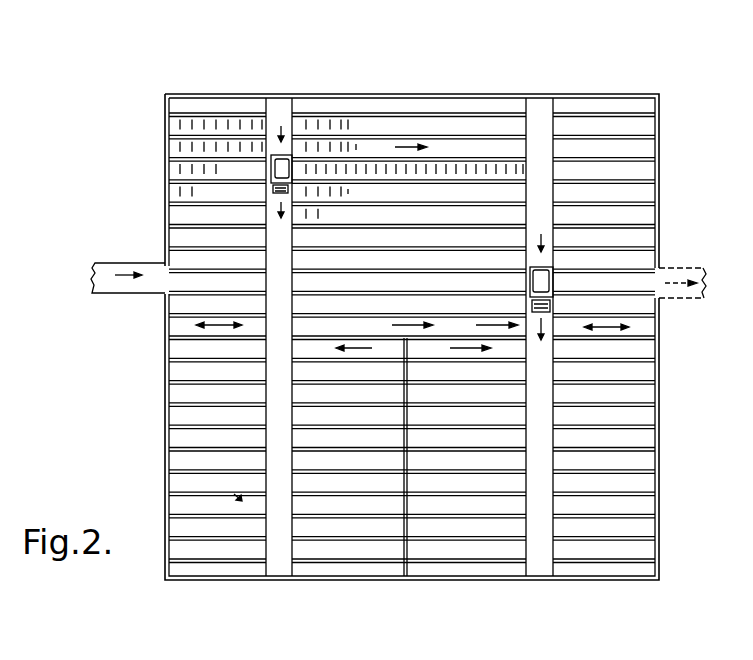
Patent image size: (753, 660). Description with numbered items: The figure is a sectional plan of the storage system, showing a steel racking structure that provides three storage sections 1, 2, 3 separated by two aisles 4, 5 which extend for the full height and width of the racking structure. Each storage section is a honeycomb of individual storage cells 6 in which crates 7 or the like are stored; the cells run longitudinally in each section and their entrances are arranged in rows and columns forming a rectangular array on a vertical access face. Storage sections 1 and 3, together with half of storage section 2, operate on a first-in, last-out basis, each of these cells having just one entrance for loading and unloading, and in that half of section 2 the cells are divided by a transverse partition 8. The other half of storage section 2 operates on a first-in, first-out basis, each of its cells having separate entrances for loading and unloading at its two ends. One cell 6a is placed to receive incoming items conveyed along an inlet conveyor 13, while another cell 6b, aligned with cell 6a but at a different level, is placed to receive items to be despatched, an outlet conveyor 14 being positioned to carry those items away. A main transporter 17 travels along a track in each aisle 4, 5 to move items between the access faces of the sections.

The storage section 1 is at (188, 371).
The storage section 2 is at (457, 118).
The storage section 3 is at (626, 441).
The aisle 4 is at (277, 560).
The aisle 5 is at (540, 570).
The storage cell 6 is at (178, 213).
The incoming-items cell 6a is at (205, 283).
The despatch cell 6b is at (614, 283).
The crate 7 is at (180, 143).
The transverse partition 8 is at (403, 548).
The inlet conveyor 13 is at (127, 284).
The outlet conveyor 14 is at (670, 301).
The main transporter 17 is at (290, 155).